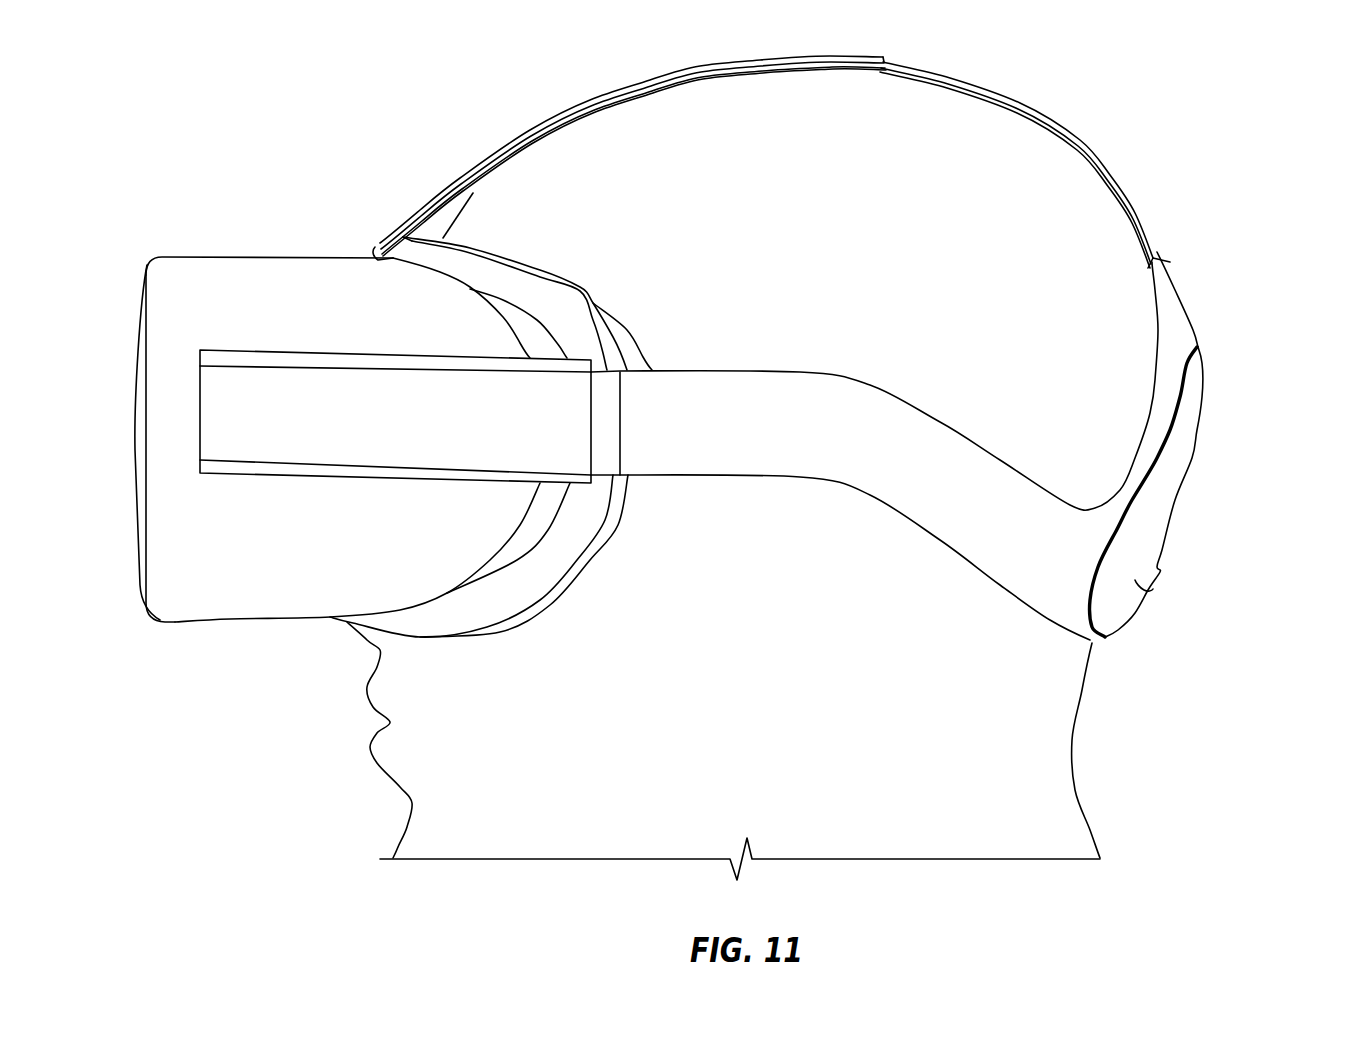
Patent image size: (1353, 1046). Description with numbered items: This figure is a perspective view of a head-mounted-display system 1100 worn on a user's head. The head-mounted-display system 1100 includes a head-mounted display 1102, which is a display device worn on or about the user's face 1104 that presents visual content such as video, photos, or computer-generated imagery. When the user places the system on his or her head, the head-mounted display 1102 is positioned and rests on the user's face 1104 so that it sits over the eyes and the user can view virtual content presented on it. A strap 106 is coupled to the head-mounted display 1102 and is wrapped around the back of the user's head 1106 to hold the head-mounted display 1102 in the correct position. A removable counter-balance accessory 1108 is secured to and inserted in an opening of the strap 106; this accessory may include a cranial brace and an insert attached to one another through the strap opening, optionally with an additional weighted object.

The head-mounted-display system 1100 is at (159, 113).
The head-mounted display 1102 is at (238, 620).
The user's face 1104 is at (378, 653).
The strap 106 is at (943, 557).
The back of the user's head 1106 is at (1102, 382).
The removable counter-balance accessory 1108 is at (1147, 592).